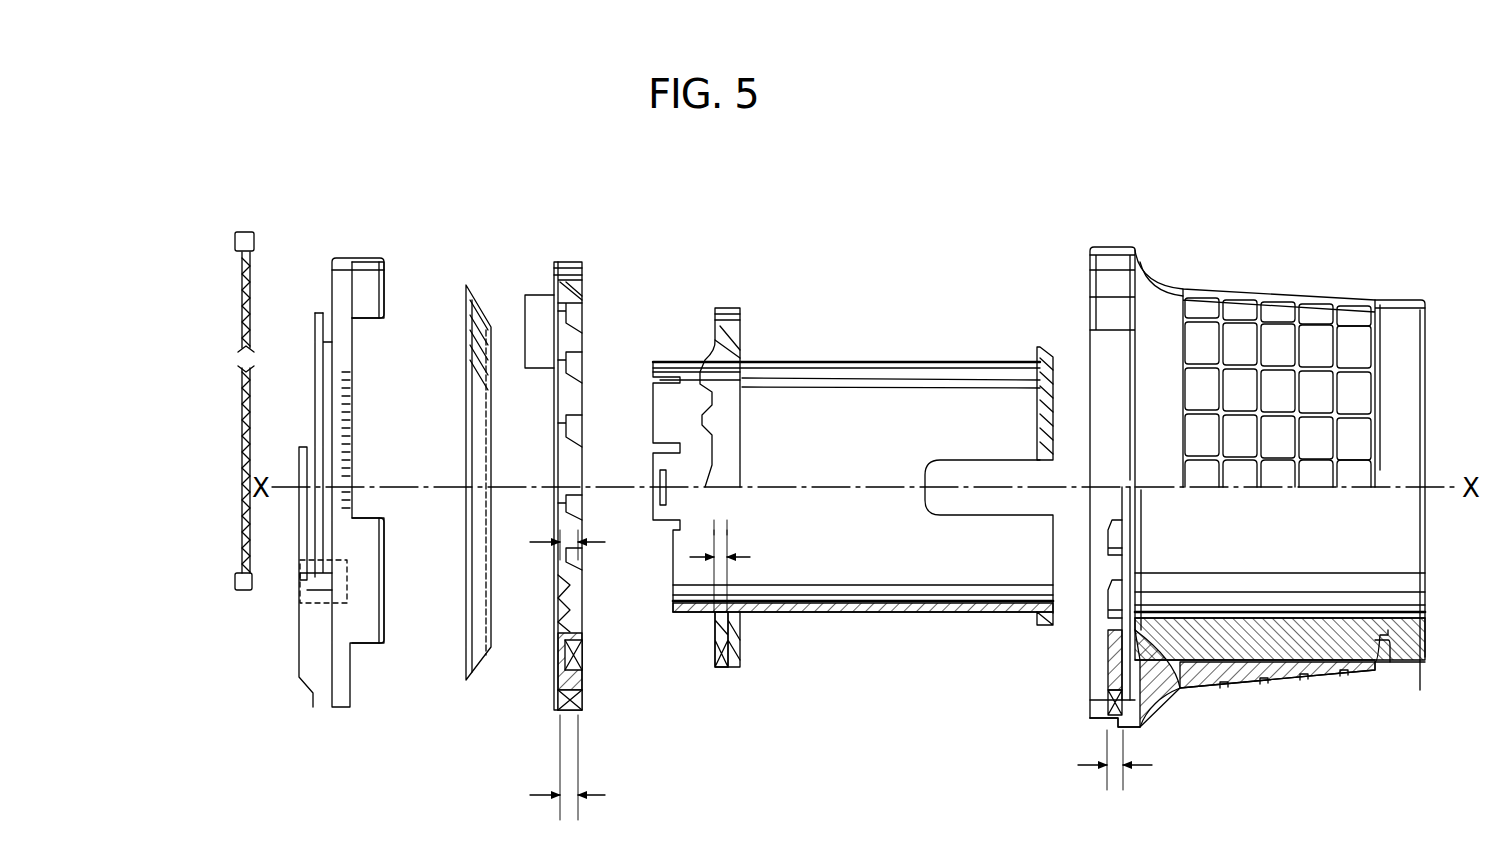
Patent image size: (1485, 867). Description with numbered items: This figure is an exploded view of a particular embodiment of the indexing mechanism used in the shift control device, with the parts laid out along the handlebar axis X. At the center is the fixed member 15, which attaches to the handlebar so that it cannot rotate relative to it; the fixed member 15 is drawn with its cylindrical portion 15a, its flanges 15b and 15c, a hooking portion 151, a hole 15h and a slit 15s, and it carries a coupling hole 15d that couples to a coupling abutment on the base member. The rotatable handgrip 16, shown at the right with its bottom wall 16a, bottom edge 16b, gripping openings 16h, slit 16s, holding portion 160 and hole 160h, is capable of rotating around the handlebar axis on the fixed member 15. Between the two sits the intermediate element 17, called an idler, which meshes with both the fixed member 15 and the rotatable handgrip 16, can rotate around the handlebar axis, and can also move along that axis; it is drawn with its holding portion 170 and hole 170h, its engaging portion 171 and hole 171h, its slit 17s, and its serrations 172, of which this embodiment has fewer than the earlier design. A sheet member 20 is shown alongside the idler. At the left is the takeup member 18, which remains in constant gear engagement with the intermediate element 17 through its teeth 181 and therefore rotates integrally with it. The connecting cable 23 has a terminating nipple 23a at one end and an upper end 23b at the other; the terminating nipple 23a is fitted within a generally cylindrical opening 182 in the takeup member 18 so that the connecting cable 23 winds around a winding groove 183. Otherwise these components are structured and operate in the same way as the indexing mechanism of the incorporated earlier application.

The fixed member 15 is at (876, 362).
The cylindrical portion of barrel 15a is at (940, 402).
The flange of barrel 15b is at (1040, 347).
The lower flange of barrel 15c is at (740, 667).
The coupling hole 15d is at (660, 483).
The hole in barrel 15h is at (722, 560).
The slit in barrel 15s is at (728, 575).
The hooking portion of barrel 151 is at (710, 405).
The rotatable handgrip 16 is at (1318, 283).
The bottom wall of casing 16a is at (1368, 645).
The bottom edge of casing 16b is at (1095, 728).
The openings in casing 16h is at (1240, 300).
The slit in casing 16s is at (1125, 746).
The holding portion of casing 160 is at (1098, 700).
The hole in holding portion 160h is at (1114, 772).
The intermediate element 17 is at (567, 262).
The holding portion of holder 170 is at (575, 655).
The hole in holder 170h is at (572, 537).
The engaging portion of holder 171 is at (582, 700).
The hole in engaging portion 171h is at (578, 800).
The serrations 172 is at (540, 342).
The slit in holder 17s is at (560, 768).
The takeup member 18 is at (350, 262).
The teeth 181 is at (365, 305).
The generally cylindrical opening 182 is at (303, 580).
The winding groove 183 is at (330, 388).
The sheet member 20 is at (476, 300).
The connecting cable 23 is at (235, 405).
The terminating nipple 23a is at (235, 577).
The upper end of cord 23b is at (241, 232).